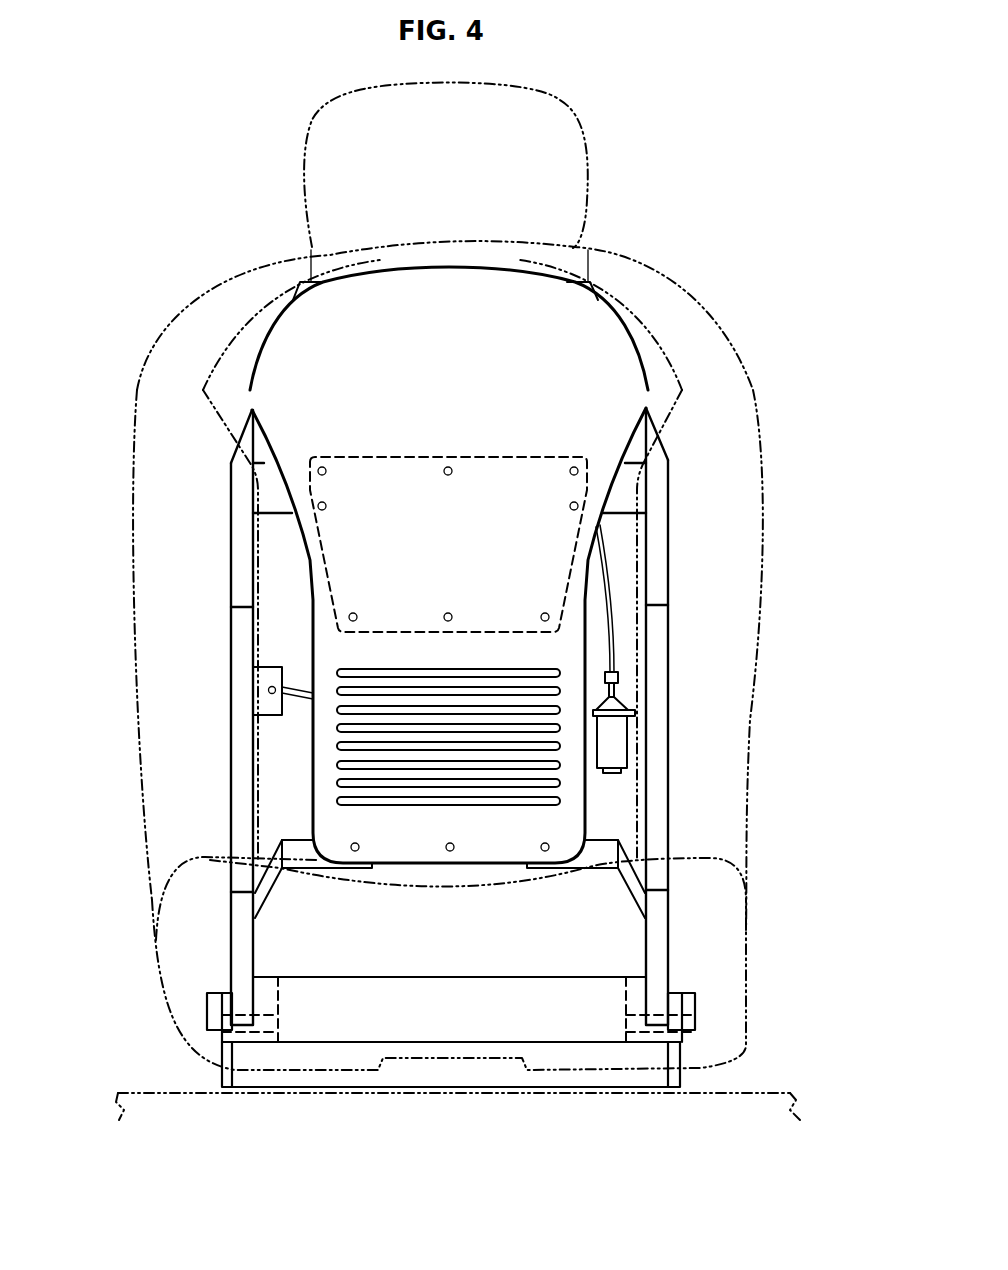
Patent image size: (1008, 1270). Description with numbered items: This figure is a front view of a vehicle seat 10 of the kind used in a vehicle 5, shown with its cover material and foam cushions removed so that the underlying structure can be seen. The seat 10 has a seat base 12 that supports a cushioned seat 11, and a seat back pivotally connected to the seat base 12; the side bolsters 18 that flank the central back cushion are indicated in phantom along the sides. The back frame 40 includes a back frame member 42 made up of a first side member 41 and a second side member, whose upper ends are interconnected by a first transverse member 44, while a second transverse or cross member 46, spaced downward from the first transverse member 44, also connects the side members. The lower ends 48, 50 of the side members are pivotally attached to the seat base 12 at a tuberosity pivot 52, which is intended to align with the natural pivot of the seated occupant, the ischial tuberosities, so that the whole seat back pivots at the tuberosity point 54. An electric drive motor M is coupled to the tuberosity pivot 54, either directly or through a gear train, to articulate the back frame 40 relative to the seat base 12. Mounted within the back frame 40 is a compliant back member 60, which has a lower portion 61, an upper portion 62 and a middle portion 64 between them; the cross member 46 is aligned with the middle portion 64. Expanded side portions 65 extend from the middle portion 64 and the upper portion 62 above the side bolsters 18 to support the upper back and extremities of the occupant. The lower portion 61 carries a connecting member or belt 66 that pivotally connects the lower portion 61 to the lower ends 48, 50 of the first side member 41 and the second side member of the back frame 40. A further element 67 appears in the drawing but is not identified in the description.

The vehicle 5 is at (835, 1052).
The vehicle seat 10 is at (168, 178).
The cushioned seat 11 is at (722, 917).
The seat base 12 is at (657, 1053).
The side bolsters 18 is at (173, 680).
The back frame 40 is at (675, 432).
The first side member 41 is at (243, 632).
The back frame member 42 is at (655, 540).
The first transverse member 44 is at (313, 280).
The second transverse member 46 is at (268, 497).
The lower end of first side member 48 is at (215, 973).
The lower end of second side member 50 is at (685, 948).
The tuberosity pivot 52 is at (697, 1005).
The tuberosity point 54 is at (697, 975).
The compliant back member 60 is at (540, 320).
The lower portion 61 is at (557, 830).
The upper portion 62 is at (312, 355).
The middle portion 64 is at (486, 561).
The expanded side portions 65 is at (610, 385).
The connecting member or belt 66 is at (598, 857).
The floor line 67 is at (157, 1093).
The electric drive motor M is at (616, 745).